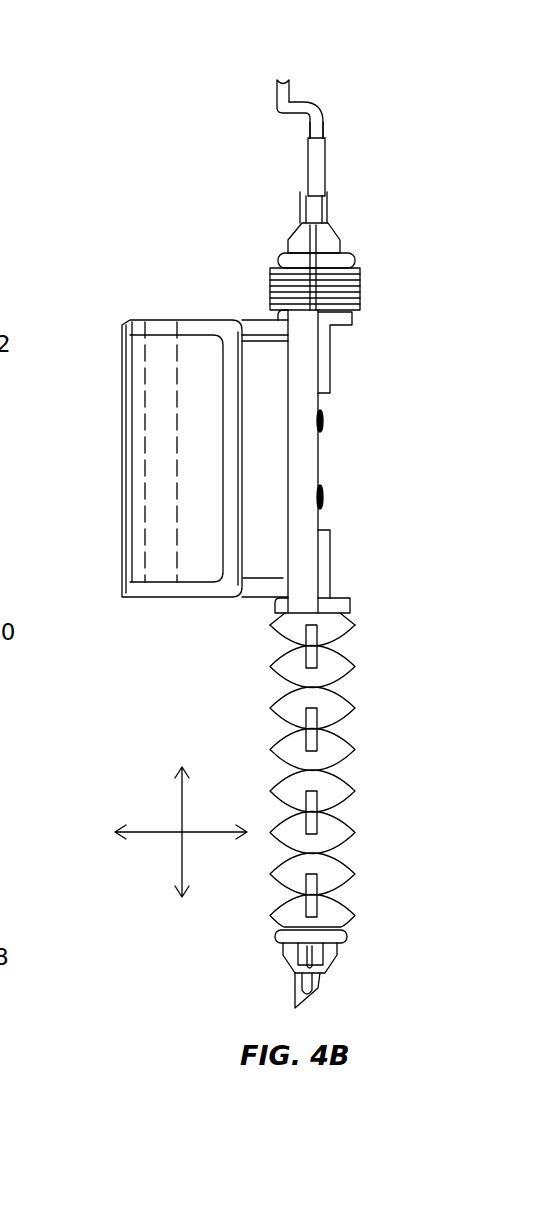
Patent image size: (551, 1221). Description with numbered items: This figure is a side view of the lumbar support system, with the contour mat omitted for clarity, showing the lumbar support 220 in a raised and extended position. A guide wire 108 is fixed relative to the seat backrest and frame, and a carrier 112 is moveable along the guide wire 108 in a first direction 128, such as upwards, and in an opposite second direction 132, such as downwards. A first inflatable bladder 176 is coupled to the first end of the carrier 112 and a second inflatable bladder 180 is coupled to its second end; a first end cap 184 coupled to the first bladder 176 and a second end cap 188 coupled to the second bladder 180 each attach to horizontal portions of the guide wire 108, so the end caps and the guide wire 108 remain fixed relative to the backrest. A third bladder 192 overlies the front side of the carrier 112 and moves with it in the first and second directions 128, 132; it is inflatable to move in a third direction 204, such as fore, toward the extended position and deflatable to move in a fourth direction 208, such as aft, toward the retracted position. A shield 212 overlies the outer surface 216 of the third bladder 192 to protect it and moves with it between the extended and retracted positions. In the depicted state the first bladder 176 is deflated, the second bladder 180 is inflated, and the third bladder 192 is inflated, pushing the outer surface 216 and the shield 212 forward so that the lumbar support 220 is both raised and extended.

The guide wire 108 is at (302, 108).
The first end cap 184 is at (332, 260).
The first inflatable bladder 176 is at (343, 288).
The carrier 112 is at (311, 377).
The third bladder 192 is at (194, 433).
The outer surface 216 is at (253, 350).
The shield 212 is at (150, 528).
The lumbar support 220 is at (144, 433).
The second inflatable bladder 180 is at (338, 710).
The second end cap 188 is at (326, 950).
The second direction 132 is at (168, 799).
The first direction 128 is at (186, 878).
The third direction 204 is at (144, 846).
The fourth direction 208 is at (214, 824).